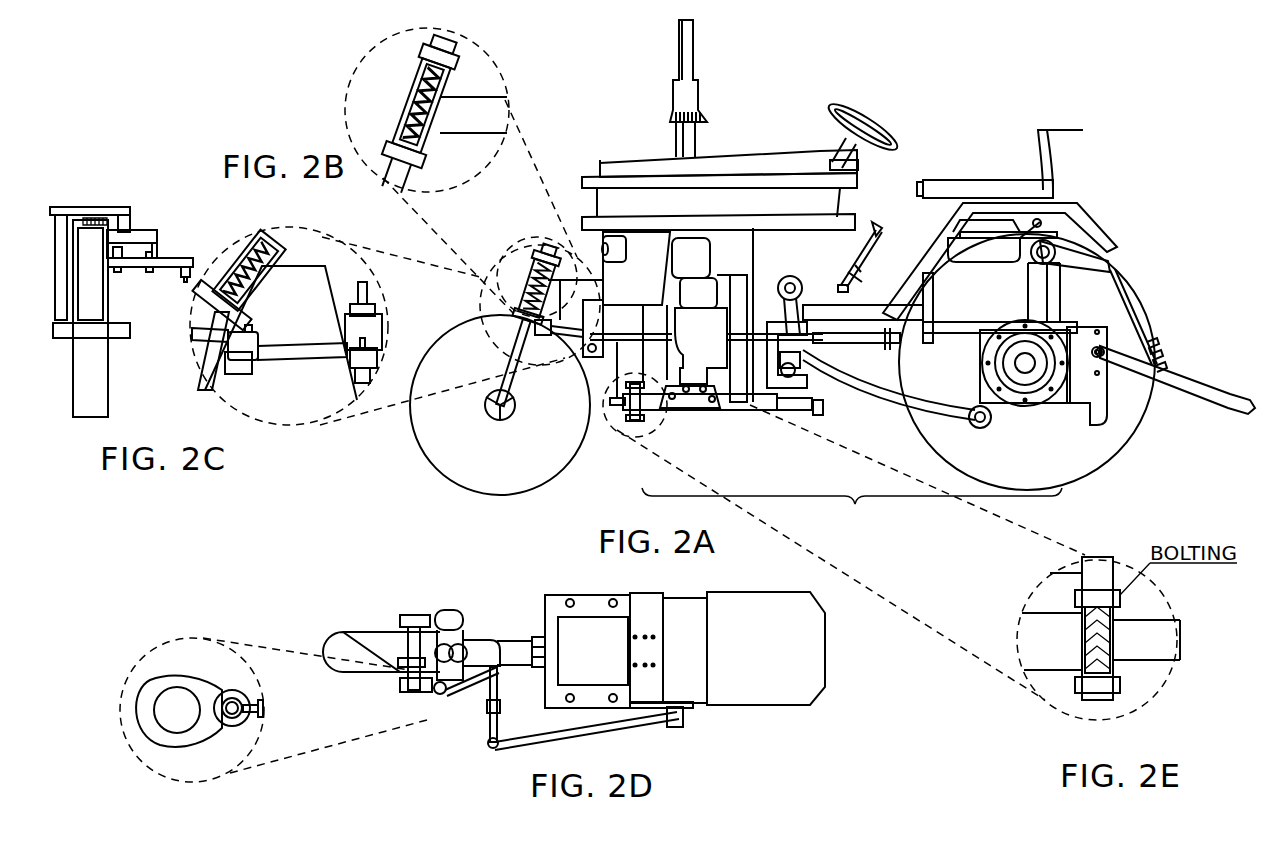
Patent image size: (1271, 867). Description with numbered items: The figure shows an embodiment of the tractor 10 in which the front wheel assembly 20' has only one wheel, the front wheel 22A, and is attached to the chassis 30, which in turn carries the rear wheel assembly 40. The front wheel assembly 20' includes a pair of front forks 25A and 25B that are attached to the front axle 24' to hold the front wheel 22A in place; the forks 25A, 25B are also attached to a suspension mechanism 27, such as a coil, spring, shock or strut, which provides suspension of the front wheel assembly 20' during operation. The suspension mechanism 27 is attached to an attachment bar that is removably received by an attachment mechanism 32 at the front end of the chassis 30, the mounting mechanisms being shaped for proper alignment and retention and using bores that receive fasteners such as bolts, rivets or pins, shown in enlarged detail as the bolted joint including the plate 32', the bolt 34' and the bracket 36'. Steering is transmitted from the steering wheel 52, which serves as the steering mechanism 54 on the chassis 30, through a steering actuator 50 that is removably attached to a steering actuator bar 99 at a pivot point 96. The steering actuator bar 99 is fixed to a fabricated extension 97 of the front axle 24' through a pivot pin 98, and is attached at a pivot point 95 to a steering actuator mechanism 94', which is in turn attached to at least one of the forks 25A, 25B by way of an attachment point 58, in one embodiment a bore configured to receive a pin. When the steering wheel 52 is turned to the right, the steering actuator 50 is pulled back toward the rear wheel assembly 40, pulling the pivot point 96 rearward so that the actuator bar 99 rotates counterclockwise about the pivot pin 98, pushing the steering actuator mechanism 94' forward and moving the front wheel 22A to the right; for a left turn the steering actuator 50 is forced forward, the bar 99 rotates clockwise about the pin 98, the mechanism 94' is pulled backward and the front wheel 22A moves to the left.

In FIG. 2A, the tractor 10 is at (938, 124).
In FIG. 2A, the front wheel assembly 20' is at (493, 378).
In FIG. 2D, the front wheel assembly 20' is at (382, 622).
In FIG. 2D, the front wheel 22A is at (345, 640).
In FIG. 2D, the front axle 24' is at (439, 681).
In FIG. 2D, the front fork 25A is at (422, 615).
In FIG. 2D, the front fork 25B is at (417, 692).
In FIG. 2B, the suspension mechanism 27 is at (405, 100).
In FIG. 2A, the chassis 30 is at (852, 511).
In FIG. 2A, the attachment mechanism 32 is at (622, 428).
In FIG. 2E, the frame plate 32' is at (1164, 665).
In FIG. 2E, the bolt 34' is at (1124, 647).
In FIG. 2E, the bracket plate 36' is at (1041, 645).
In FIG. 2A, the rear wheel assembly 40 is at (1148, 428).
In FIG. 2A, the steering actuator 50 is at (718, 410).
In FIG. 2D, the steering actuator 50 is at (582, 737).
In FIG. 2A, the steering wheel 52 is at (866, 120).
In FIG. 2A, the steering mechanism 54 is at (790, 276).
In FIG. 2D, the attachment point 58 is at (176, 697).
In FIG. 2C, the steering actuator mechanism 94' is at (287, 350).
In FIG. 2D, the steering actuator mechanism 94' is at (356, 708).
In FIG. 2C, the pivot point 95 is at (118, 272).
In FIG. 2D, the pivot point 95 is at (517, 647).
In FIG. 2C, the pivot point 96 is at (188, 258).
In FIG. 2D, the pivot point 96 is at (493, 745).
In FIG. 2C, the fabricated extension 97 is at (152, 232).
In FIG. 2D, the fabricated extension 97 is at (497, 705).
In FIG. 2C, the pivot pin 98 is at (150, 272).
In FIG. 2D, the steering actuator bar 99 is at (497, 730).